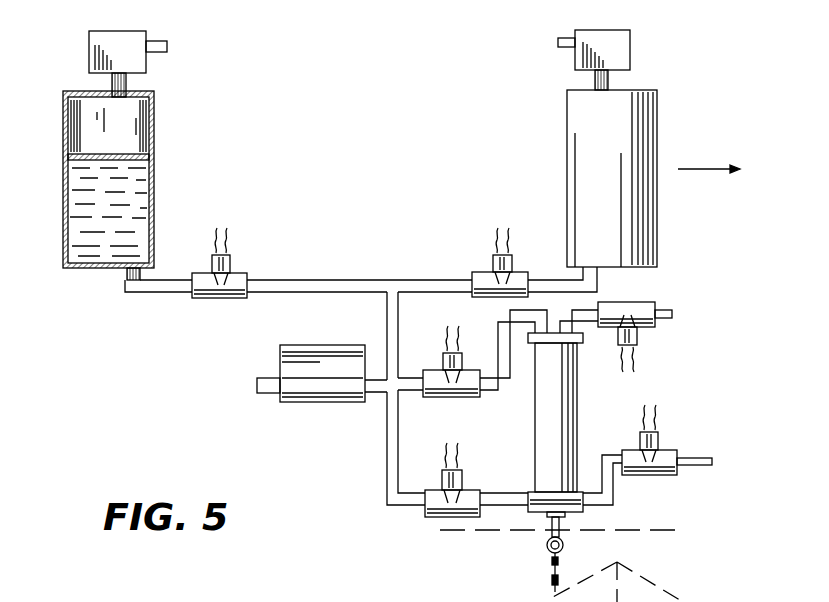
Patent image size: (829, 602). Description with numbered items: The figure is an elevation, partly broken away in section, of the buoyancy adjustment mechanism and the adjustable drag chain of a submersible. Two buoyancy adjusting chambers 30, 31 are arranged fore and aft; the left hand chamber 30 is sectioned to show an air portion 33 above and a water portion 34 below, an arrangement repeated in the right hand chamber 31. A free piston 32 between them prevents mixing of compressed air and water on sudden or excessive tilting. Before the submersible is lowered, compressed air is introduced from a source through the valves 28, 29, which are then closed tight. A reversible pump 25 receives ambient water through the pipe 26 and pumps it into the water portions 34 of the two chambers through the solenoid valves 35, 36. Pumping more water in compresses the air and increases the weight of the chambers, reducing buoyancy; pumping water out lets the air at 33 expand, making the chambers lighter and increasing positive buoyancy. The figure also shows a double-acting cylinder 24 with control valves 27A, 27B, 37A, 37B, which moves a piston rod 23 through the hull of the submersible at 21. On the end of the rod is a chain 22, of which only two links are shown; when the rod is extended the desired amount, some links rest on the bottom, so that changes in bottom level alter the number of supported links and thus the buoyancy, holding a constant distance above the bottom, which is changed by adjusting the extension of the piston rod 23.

The hull 21 is at (637, 530).
The chain 22 is at (557, 563).
The piston rod 23 is at (557, 523).
The double-acting cylinder 24 is at (535, 418).
The reversible pump 25 is at (350, 400).
The pipe 26 is at (265, 378).
The control valve 27A is at (652, 327).
The control valve 27B is at (668, 450).
The valve 28 is at (88, 39).
The valve 29 is at (632, 42).
The chamber 30 is at (153, 105).
The chamber 31 is at (567, 105).
The free piston 32 is at (68, 157).
The air portion 33 is at (100, 127).
The water portion 34 is at (83, 202).
The solenoid valve 35 is at (208, 273).
The solenoid valve 36 is at (492, 270).
The control valve 37A is at (437, 372).
The control valve 37B is at (463, 490).